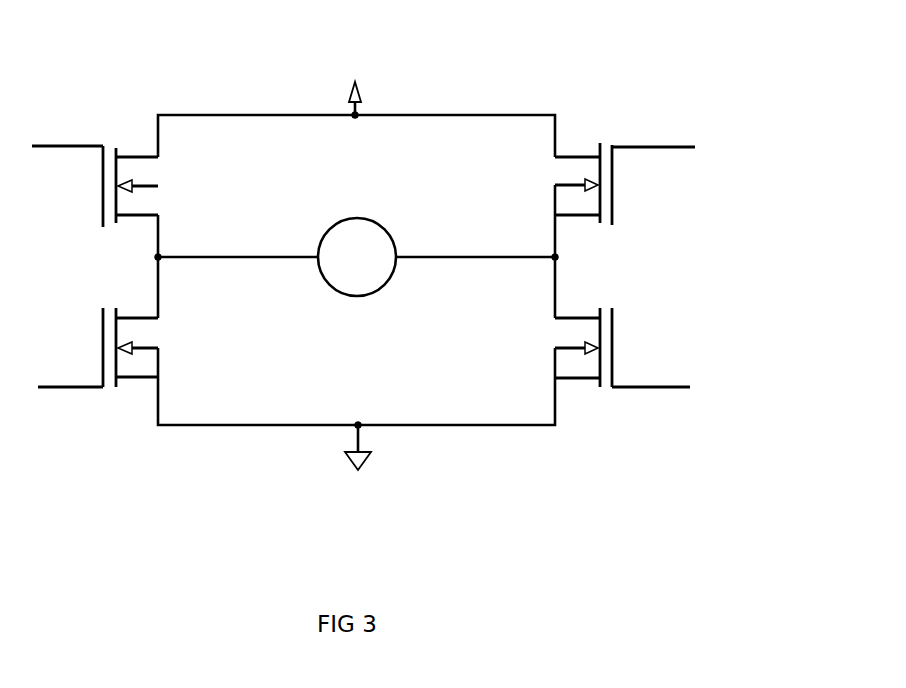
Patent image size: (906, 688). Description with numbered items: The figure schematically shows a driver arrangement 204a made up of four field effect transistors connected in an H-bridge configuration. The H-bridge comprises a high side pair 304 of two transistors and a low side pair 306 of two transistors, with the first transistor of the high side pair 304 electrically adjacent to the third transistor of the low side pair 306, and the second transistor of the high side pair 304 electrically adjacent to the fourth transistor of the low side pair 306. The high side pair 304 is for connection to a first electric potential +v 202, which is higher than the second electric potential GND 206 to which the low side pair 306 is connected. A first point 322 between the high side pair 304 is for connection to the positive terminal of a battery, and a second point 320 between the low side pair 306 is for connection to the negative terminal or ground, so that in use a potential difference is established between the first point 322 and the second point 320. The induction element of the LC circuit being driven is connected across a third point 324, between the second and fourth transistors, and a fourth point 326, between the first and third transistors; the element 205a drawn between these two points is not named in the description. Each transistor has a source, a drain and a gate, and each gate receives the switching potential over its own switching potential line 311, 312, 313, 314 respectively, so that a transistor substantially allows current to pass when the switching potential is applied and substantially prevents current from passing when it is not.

The driver arrangement 204a is at (566, 70).
The load (motor winding) 205a is at (357, 257).
The first electric potential +v 202 is at (315, 95).
The second electric potential GND 206 is at (339, 465).
The high side pair 304 is at (671, 157).
The low side pair 306 is at (673, 380).
The switching potential line 311 is at (58, 146).
The switching potential line 312 is at (655, 147).
The switching potential line 313 is at (68, 387).
The switching potential line 314 is at (650, 387).
The second point 320 is at (360, 425).
The first point 322 is at (356, 114).
The third point 324 is at (555, 257).
The fourth point 326 is at (158, 257).